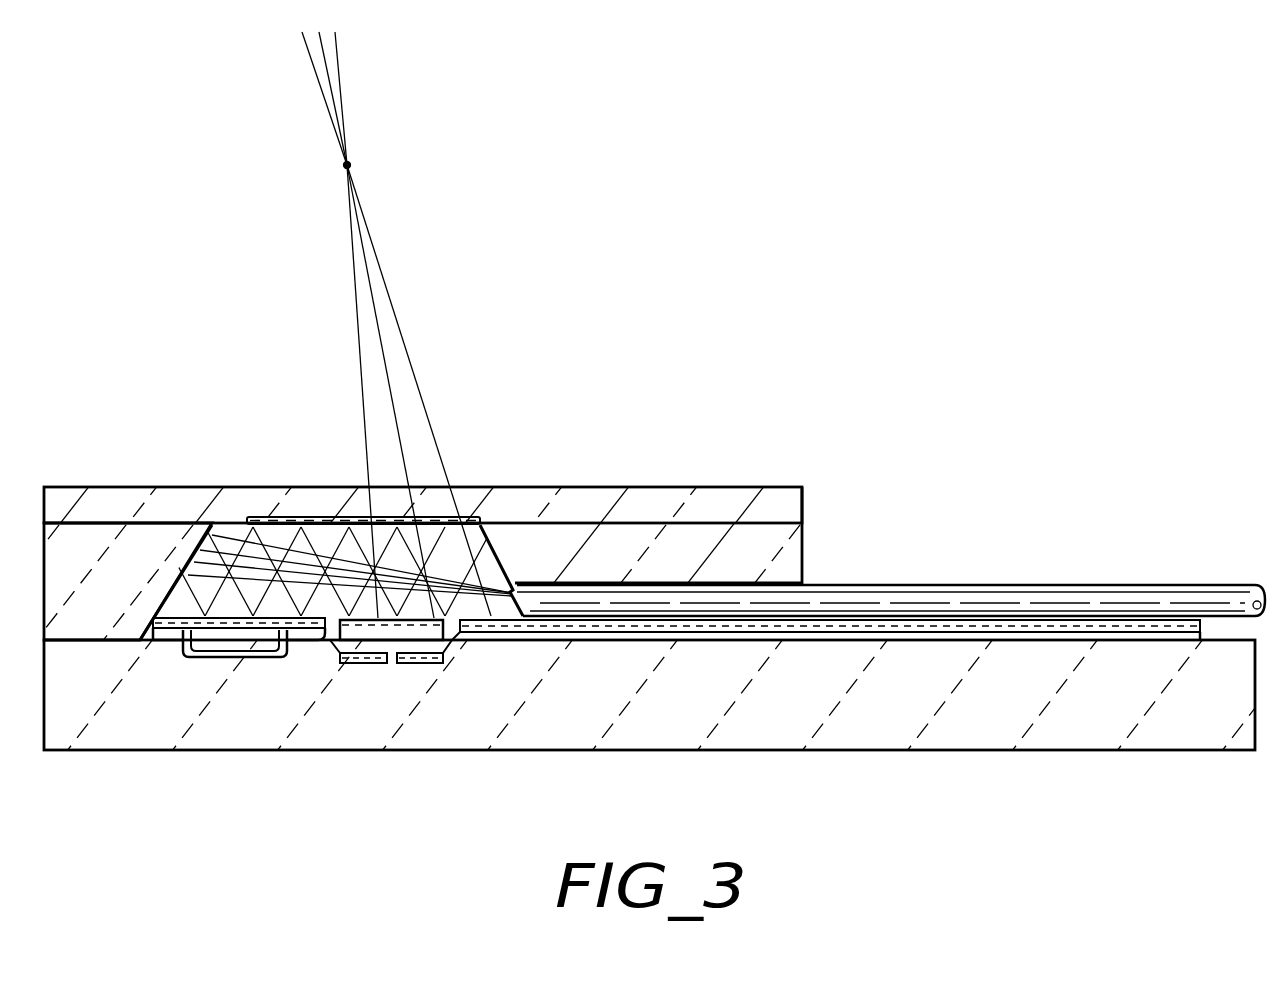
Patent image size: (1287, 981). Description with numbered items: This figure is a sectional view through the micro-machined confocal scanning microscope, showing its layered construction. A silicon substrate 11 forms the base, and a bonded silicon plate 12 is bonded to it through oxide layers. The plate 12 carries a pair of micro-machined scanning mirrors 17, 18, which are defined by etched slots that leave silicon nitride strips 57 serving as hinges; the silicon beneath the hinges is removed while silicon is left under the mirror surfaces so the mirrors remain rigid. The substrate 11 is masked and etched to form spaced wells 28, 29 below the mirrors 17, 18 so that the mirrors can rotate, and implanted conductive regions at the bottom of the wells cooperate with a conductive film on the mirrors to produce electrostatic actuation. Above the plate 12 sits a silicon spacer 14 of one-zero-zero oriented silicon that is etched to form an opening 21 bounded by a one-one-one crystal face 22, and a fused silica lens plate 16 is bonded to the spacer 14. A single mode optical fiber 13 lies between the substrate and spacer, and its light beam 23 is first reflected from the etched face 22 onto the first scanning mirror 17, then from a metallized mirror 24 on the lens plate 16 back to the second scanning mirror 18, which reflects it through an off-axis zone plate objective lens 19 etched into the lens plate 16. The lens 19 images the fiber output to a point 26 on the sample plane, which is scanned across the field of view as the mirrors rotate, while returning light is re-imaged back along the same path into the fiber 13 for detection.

The silicon substrate 11 is at (817, 700).
The bonded silicon plate 12 is at (665, 641).
The single mode optical fiber 13 is at (958, 633).
The silicon spacer 14 is at (793, 557).
The fused silica lens plate 16 is at (757, 503).
The first scanning mirror 17 is at (235, 640).
The second scanning mirror 18 is at (368, 640).
The objective lens 19 is at (474, 510).
The opening 21 is at (520, 522).
The 111 face 22 is at (170, 593).
The light beam 23 is at (468, 652).
The metallized mirror 24 is at (287, 516).
The point on the sample plane 26 is at (352, 164).
The well 28 is at (208, 657).
The well 29 is at (478, 600).
The silicon nitride strips 57 is at (178, 645).